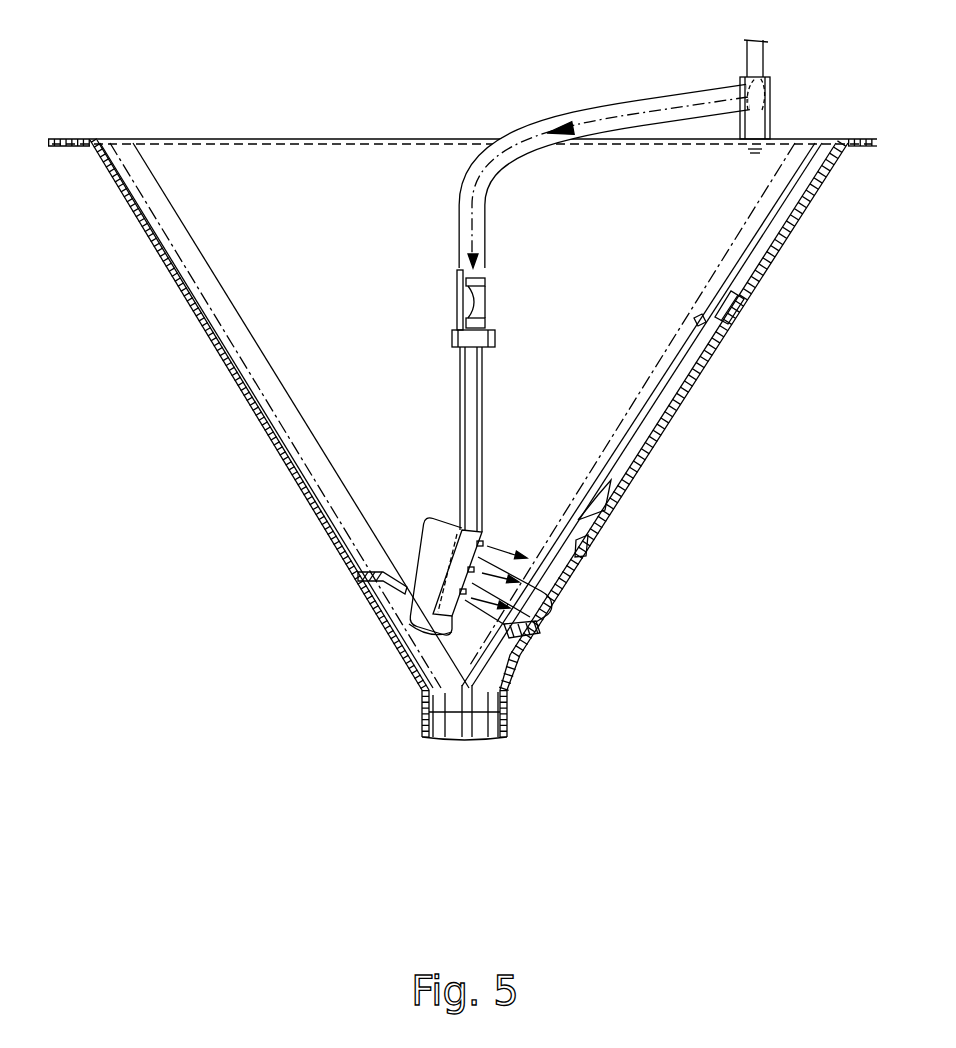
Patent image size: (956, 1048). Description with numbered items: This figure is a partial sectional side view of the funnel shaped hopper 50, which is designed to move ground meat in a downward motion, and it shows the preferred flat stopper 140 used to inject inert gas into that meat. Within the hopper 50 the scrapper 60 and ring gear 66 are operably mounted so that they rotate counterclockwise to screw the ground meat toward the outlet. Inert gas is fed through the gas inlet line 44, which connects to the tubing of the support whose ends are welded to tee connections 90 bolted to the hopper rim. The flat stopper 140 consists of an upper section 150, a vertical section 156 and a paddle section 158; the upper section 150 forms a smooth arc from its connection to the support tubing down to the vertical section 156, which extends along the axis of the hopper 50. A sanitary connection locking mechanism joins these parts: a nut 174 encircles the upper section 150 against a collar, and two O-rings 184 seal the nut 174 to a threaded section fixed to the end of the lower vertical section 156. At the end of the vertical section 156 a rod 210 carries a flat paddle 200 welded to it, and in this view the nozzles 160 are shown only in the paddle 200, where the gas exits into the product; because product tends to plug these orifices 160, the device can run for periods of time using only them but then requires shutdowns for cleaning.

The gas inlet line 44 is at (765, 61).
The hopper 50 is at (760, 287).
The scrapper 60 is at (655, 402).
The ring gear 66 is at (363, 585).
The tee connection 90 is at (770, 115).
The flat stopper 140 is at (432, 309).
The upper section 150 is at (637, 100).
The vertical section 156 is at (482, 434).
The paddle section 158 is at (442, 513).
The nozzles 160 is at (515, 592).
The nut 174 is at (494, 349).
The O-rings 184 is at (488, 323).
The flat paddle 200 is at (425, 638).
The rod 210 is at (500, 565).